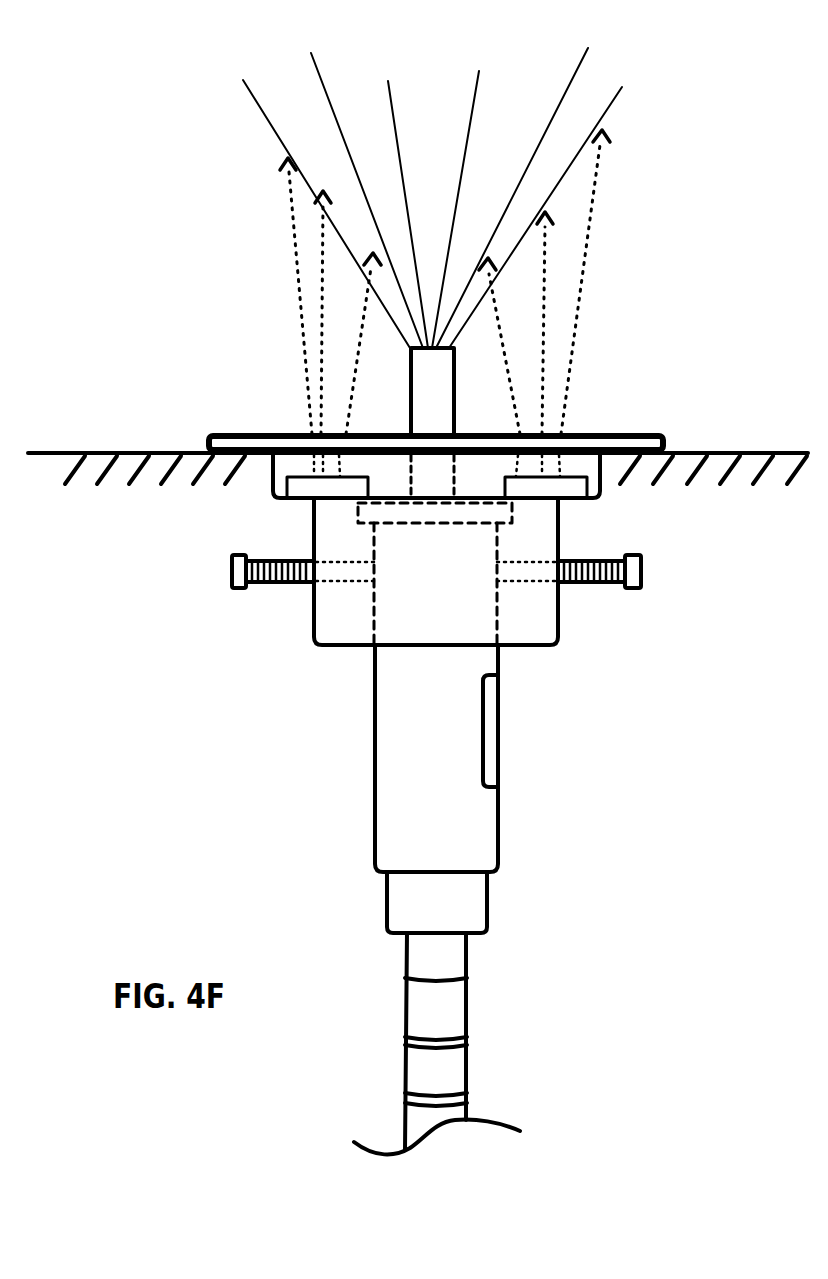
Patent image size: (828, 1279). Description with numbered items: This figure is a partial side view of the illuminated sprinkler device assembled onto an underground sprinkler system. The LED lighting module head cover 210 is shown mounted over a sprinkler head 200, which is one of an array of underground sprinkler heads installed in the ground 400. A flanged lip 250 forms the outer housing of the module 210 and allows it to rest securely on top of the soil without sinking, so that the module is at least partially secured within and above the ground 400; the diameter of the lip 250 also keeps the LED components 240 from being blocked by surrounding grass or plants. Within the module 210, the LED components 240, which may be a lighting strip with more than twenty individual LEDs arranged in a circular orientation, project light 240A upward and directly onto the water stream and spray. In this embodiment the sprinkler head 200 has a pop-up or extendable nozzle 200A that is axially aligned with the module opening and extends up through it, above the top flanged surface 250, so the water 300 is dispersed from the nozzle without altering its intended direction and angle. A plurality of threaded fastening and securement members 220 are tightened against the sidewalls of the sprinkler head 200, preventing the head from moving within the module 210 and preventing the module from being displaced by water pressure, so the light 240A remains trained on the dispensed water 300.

The sprinkler head 200 is at (400, 610).
The pop-up nozzle 200A is at (425, 392).
The LED lighting module head cover 210 is at (130, 602).
The threaded fastening and securement members 220 is at (228, 573).
The LED components 240 is at (570, 487).
The light 240A is at (600, 280).
The flanged lip 250 is at (228, 433).
The water 300 is at (605, 67).
The ground 400 is at (108, 452).